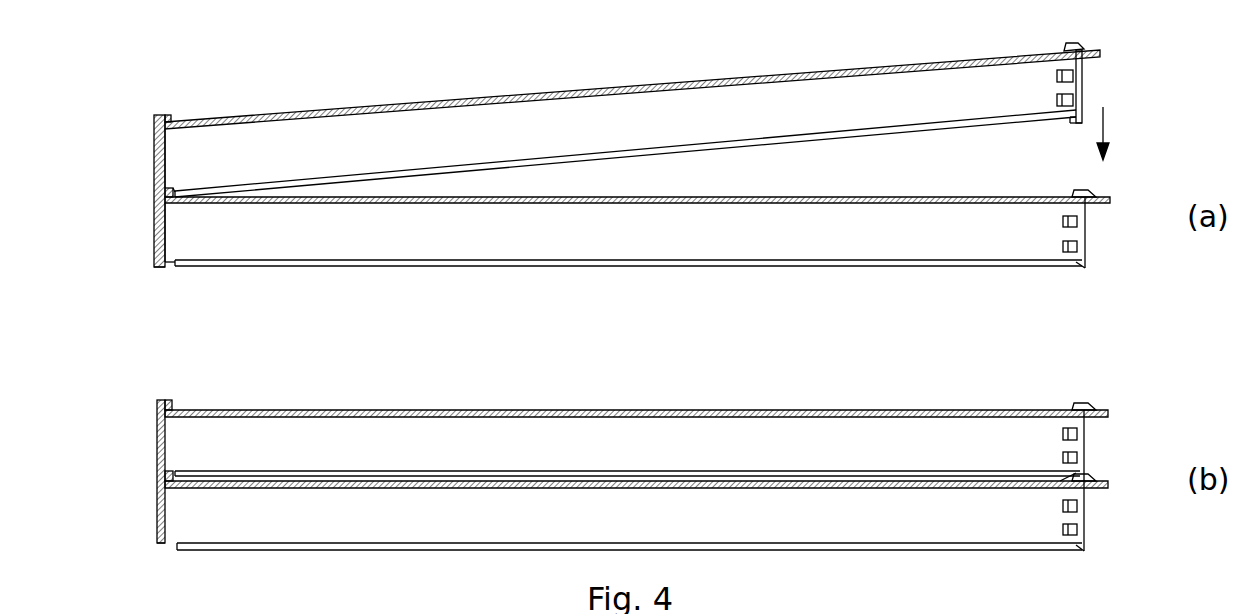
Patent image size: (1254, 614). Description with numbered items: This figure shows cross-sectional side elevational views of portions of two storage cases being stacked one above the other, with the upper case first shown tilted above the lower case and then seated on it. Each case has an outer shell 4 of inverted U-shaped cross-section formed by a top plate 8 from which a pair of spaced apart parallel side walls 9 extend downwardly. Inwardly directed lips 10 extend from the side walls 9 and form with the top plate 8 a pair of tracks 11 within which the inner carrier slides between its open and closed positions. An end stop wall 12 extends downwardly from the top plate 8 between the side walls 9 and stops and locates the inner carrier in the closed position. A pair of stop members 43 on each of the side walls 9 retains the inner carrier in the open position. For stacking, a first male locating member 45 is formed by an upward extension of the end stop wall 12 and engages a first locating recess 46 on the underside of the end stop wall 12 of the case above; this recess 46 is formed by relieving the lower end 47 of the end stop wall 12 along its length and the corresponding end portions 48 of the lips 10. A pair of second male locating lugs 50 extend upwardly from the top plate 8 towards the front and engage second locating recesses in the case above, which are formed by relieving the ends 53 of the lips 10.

The outer shell 4 is at (370, 104).
The top plate 8 is at (492, 98).
The side walls 9 is at (684, 100).
The lips 10 is at (788, 144).
The tracks 11 is at (590, 114).
The end stop wall 12 is at (157, 234).
The stop members 43 is at (1074, 76).
The first male locating member 45 is at (165, 113).
The first locating recess 46 is at (158, 192).
The lower end of the end stop wall 47 is at (158, 190).
The end portions of the lips 48 is at (170, 190).
The second male locating lugs 50 is at (1072, 44).
The ends of the lips 53 is at (1078, 124).